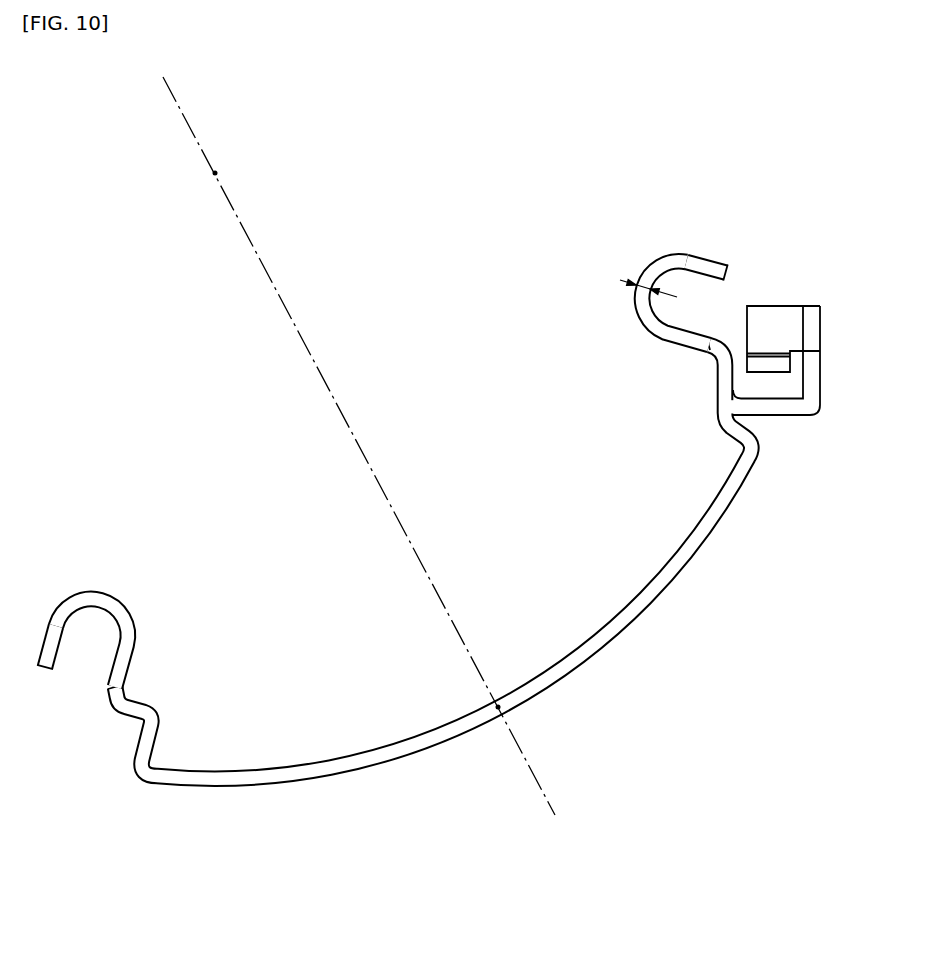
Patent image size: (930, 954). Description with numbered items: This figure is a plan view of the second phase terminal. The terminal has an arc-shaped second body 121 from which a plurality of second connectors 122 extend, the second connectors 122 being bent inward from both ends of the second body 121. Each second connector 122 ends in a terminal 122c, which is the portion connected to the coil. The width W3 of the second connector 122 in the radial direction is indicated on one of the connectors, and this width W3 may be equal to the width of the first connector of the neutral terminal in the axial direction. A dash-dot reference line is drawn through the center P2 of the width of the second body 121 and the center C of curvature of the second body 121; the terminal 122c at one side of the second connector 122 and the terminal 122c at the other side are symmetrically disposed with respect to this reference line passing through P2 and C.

The second body 121 is at (705, 588).
The second connector 122 is at (158, 568).
The terminal 122c is at (66, 604).
The width of the second connector W3 is at (638, 283).
The center of curvature of the second body C is at (232, 167).
The center of a width of the second body P2 is at (498, 707).